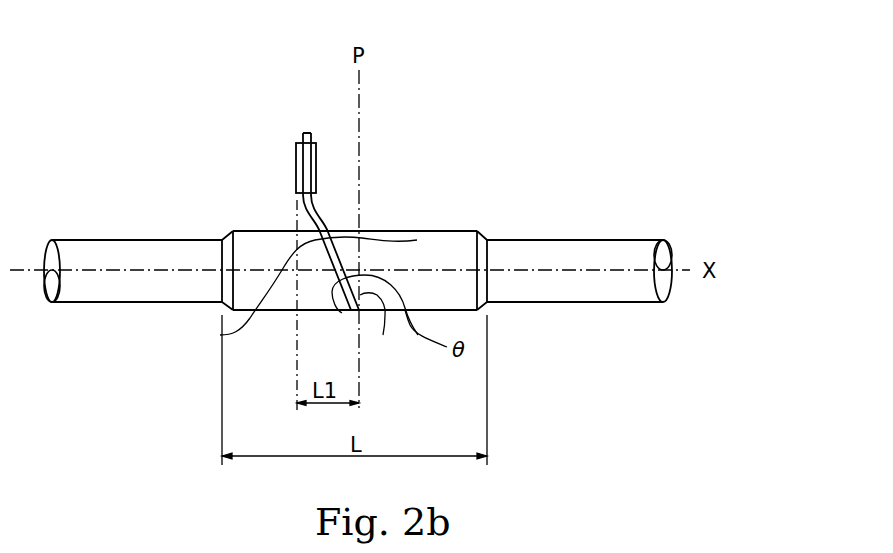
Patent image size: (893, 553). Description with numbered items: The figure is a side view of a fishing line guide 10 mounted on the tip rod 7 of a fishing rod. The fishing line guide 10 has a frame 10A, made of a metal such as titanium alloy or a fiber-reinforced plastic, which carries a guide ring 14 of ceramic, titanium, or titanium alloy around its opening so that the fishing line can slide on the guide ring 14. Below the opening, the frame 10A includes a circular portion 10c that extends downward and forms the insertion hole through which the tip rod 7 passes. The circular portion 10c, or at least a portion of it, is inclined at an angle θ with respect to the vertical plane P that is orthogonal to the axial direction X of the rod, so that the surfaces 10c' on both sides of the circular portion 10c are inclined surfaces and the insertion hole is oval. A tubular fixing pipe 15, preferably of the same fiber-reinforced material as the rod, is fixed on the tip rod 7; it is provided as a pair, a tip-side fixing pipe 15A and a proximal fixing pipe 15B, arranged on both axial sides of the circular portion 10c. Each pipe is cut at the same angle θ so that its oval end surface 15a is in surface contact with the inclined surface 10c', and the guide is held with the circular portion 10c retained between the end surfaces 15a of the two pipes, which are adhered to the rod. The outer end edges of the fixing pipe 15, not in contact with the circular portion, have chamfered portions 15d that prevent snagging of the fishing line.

The tip rod 7 is at (582, 245).
The fishing line guide 10 is at (377, 117).
The frame 10A is at (307, 137).
The circular portion 10c is at (361, 312).
The inclined surfaces 10c' is at (302, 274).
The guide ring 14 is at (295, 158).
The fixing pipe 15 is at (359, 225).
The tip-side fixing pipe 15A is at (263, 240).
The proximal fixing pipe 15B is at (460, 243).
The end surface 15a is at (325, 232).
The chamfered portions 15d is at (227, 257).